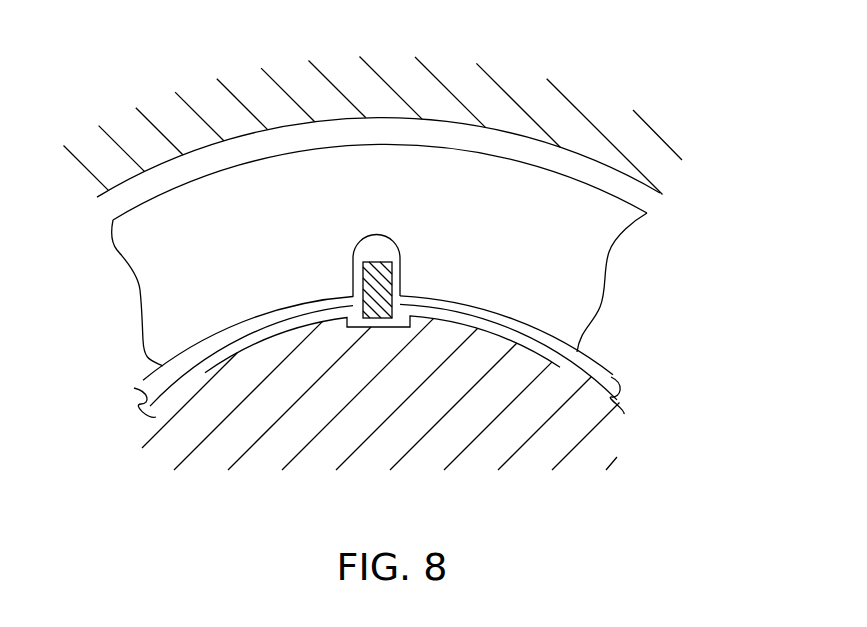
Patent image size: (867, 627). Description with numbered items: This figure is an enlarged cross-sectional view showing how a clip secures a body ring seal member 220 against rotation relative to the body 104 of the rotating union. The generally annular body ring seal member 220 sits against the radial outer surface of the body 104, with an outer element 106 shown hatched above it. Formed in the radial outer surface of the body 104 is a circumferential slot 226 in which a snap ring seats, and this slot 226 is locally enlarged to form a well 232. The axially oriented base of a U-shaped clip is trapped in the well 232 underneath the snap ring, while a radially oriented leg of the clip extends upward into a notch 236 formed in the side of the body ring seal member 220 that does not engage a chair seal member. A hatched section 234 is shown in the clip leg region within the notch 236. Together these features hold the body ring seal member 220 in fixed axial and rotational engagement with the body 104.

The body 104 is at (344, 500).
The outer housing wall 106 is at (364, 40).
The body ring seal member 220 is at (471, 220).
The circumferential slot 226 is at (145, 398).
The well 232 is at (412, 301).
The seal element (hatched insert) 234 is at (363, 270).
The notch 236 is at (372, 237).